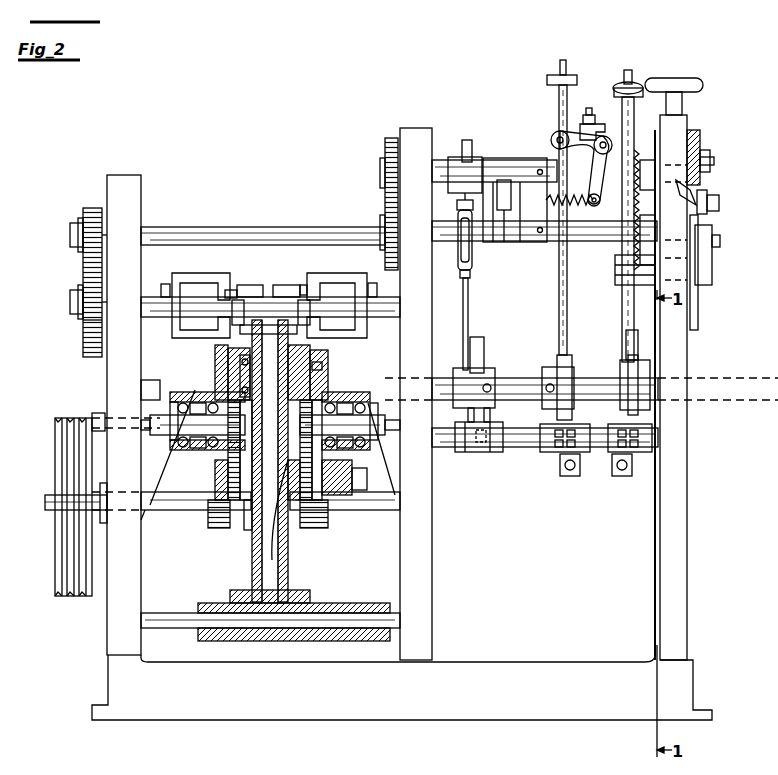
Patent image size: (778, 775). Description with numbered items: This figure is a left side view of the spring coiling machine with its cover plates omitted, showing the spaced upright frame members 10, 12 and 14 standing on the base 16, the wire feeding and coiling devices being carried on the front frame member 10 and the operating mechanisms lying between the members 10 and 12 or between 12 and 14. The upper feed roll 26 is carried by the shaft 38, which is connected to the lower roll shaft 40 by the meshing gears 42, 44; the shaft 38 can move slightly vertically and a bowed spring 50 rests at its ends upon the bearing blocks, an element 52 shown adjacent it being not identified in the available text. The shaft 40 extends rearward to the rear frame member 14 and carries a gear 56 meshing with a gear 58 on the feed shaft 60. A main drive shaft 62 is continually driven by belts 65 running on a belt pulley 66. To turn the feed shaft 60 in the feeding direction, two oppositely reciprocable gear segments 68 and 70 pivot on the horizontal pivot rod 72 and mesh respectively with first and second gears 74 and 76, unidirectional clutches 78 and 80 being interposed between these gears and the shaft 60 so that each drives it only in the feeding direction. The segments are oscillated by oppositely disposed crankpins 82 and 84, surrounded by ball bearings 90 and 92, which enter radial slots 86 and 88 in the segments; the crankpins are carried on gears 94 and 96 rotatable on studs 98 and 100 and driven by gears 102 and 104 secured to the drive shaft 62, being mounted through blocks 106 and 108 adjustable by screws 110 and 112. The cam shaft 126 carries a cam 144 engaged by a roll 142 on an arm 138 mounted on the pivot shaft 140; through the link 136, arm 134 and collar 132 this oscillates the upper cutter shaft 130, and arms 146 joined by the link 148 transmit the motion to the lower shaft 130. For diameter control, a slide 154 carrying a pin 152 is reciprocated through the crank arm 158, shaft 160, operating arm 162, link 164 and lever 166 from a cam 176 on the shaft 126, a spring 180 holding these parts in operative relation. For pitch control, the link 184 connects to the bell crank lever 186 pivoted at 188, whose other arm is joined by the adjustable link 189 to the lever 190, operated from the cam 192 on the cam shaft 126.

The front frame member 10 is at (693, 500).
The intermediate frame member 12 is at (432, 547).
The rear frame member 14 is at (107, 383).
The base 16 is at (470, 712).
The feed roll 26 is at (700, 142).
The shaft 38 is at (442, 182).
The shaft 40 is at (232, 228).
The gear 42 is at (387, 148).
The gear 44 is at (378, 263).
The bowed spring 50 is at (687, 115).
The handle 52 is at (700, 80).
The gear 56 is at (89, 208).
The gear 58 is at (84, 342).
The feed shaft 60 is at (149, 285).
The main drive shaft 62 is at (172, 508).
The belts 65 is at (58, 590).
The belt pulley 66 is at (55, 552).
The first gear segment 68 is at (305, 326).
The second gear segment 70 is at (233, 325).
The horizontal pivot rod 72 is at (345, 608).
The first gear 74 is at (288, 285).
The second gear 76 is at (262, 286).
The unidirectional clutch 78 is at (345, 280).
The unidirectional clutch 80 is at (190, 275).
The crankpin 82 is at (286, 530).
The crankpin 84 is at (268, 461).
The radial slot 86 is at (318, 405).
The radial slot 88 is at (248, 530).
The ball bearing 90 is at (296, 530).
The ball bearing 92 is at (222, 380).
The gear 94 is at (340, 510).
The gear 96 is at (228, 470).
The stud 98 is at (376, 400).
The stud 100 is at (170, 435).
The gear 102 is at (312, 528).
The gear 104 is at (228, 530).
The block 106 is at (345, 480).
The block 108 is at (228, 367).
The screw 110 is at (312, 375).
The screw 112 is at (228, 482).
The cam shaft 126 is at (172, 360).
The cutter shaft 130 is at (552, 136).
The collar 132 is at (462, 157).
The arm 134 is at (478, 160).
The link 136 is at (470, 300).
The arm 138 is at (468, 452).
The pivot shaft 140 is at (525, 447).
The roll 142 is at (480, 452).
The cam 144 is at (484, 345).
The arms 146 is at (506, 180).
The link 148 is at (490, 210).
The pin 152 is at (719, 195).
The slide 154 is at (690, 195).
The crank arm 158 is at (712, 252).
The shaft 160 is at (700, 300).
The operating arm 162 is at (615, 278).
The link 164 is at (626, 330).
The lever 166 is at (621, 476).
The cam 176 is at (628, 355).
The spring 180 is at (636, 158).
The link 184 is at (610, 212).
The bell crank lever 186 is at (606, 178).
The pivot 188 is at (606, 135).
The adjustable link 189 is at (567, 300).
The lever 190 is at (568, 476).
The cam 192 is at (555, 355).